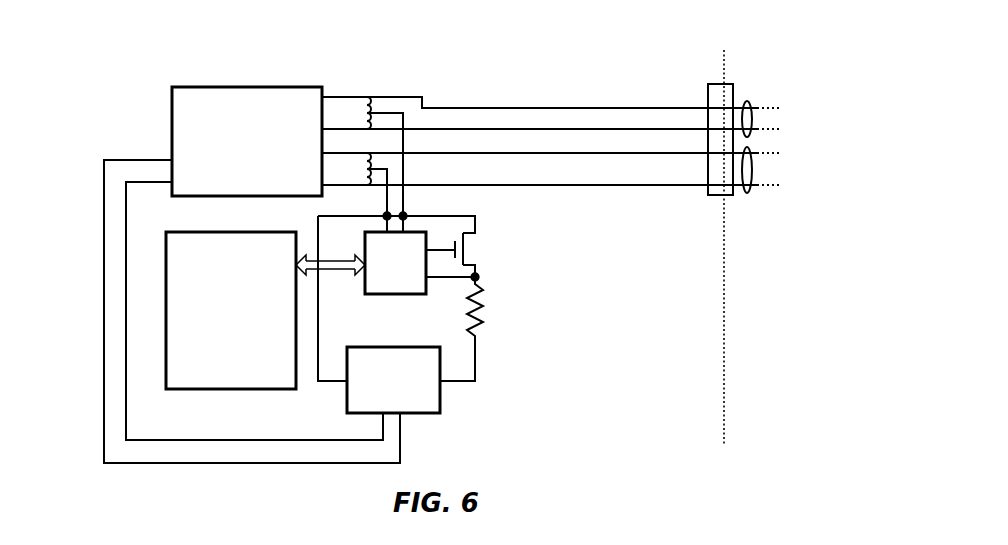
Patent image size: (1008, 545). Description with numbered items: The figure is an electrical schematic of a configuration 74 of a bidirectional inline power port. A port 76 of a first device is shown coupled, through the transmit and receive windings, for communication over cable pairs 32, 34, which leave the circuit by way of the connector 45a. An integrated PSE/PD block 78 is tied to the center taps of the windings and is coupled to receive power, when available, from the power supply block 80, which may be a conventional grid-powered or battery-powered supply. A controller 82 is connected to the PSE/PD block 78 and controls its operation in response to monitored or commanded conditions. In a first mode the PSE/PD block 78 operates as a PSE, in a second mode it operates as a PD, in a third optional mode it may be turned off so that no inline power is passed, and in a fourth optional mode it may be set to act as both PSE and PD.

The configuration of a bidirectional inline power port 74 is at (484, 78).
The port 76 is at (172, 139).
The PSE/PD block 78 is at (396, 295).
The power supply block 80 is at (425, 414).
The controller 82 is at (228, 390).
The connector 45a is at (718, 84).
The cable pair 32 is at (747, 101).
The cable pair 34 is at (747, 194).